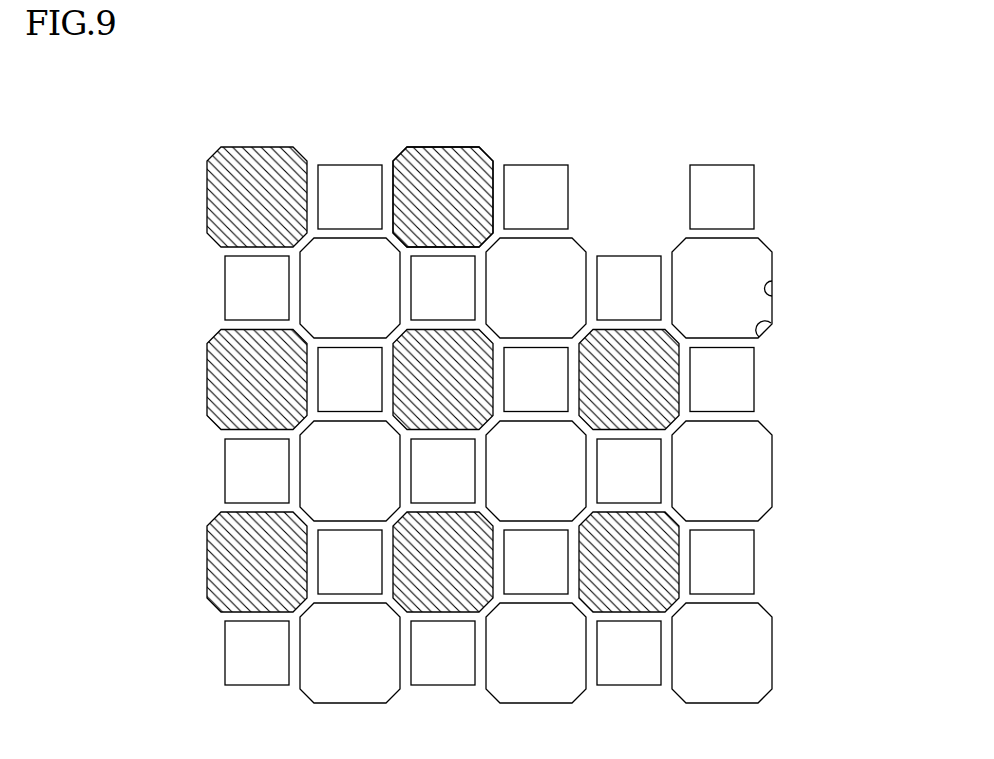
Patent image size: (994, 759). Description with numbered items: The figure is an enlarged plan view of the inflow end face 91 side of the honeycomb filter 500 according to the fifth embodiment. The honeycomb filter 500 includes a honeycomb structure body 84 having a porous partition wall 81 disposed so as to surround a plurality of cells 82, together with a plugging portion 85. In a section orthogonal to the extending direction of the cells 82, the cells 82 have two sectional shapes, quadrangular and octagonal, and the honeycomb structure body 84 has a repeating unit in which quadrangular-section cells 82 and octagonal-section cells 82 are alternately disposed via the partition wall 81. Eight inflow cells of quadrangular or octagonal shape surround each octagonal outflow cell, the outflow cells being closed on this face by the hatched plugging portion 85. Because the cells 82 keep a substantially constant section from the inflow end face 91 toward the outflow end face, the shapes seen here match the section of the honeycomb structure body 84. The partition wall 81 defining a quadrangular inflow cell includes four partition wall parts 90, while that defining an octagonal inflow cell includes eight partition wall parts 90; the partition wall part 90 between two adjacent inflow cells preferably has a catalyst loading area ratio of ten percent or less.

The honeycomb filter 500 is at (845, 65).
The inflow end face 91 is at (272, 132).
The plugging portion 85 is at (430, 197).
The partition wall 81 is at (683, 213).
The honeycomb structure body 84 is at (786, 167).
The cell 82 is at (715, 288).
The partition wall part 90 is at (765, 289).